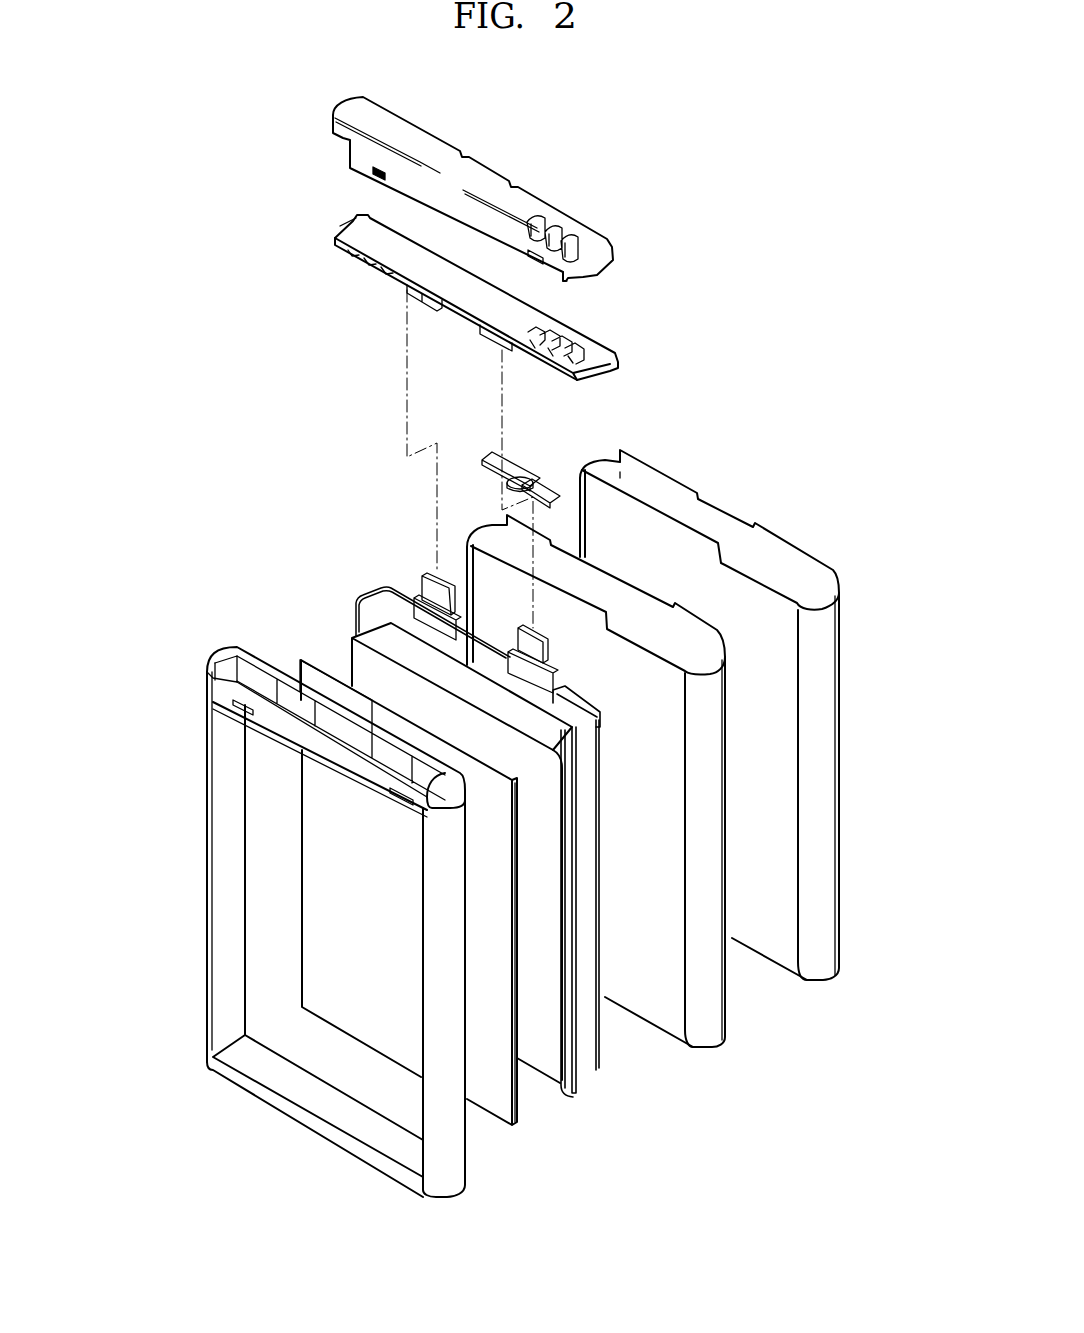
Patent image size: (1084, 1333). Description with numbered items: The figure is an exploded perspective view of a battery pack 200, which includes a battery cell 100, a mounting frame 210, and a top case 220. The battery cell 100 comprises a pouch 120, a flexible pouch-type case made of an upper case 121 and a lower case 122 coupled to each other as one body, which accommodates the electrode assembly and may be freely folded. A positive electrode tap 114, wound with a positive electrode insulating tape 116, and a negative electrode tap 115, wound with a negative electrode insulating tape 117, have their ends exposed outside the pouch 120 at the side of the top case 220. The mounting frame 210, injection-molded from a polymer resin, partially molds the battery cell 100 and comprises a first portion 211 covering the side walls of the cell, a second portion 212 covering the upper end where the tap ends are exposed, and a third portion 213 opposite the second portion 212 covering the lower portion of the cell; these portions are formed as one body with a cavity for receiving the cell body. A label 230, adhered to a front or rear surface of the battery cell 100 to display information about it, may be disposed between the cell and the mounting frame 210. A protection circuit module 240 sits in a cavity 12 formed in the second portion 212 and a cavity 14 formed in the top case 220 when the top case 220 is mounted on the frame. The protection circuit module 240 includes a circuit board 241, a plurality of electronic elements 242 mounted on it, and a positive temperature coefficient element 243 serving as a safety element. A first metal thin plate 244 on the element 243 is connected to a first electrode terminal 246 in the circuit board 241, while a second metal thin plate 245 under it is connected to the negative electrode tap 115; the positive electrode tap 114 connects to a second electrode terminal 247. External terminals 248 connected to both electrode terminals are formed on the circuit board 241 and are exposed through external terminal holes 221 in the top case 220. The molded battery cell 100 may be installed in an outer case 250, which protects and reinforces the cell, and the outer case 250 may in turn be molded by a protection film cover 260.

The battery pack 200 is at (222, 366).
The cavity 12 is at (287, 716).
The cavity 14 is at (572, 281).
The battery cell 100 is at (555, 1096).
The positive electrode tap 114 is at (423, 580).
The negative electrode tap 115 is at (535, 656).
The positive electrode insulating tape 116 is at (414, 605).
The negative electrode insulating tape 117 is at (545, 681).
The pouch 120 is at (698, 1097).
The upper case 121 is at (566, 1100).
The lower case 122 is at (580, 1092).
The mounting frame 210 is at (456, 1202).
The first portion 211 is at (207, 993).
The second portion 212 is at (263, 678).
The third portion 213 is at (276, 1102).
The top case 220 is at (615, 251).
The external terminal holes 221 is at (582, 231).
The label 230 is at (511, 1132).
The protection circuit module 240 is at (627, 371).
The circuit board 241 is at (352, 226).
The electronic elements 242 is at (396, 278).
The positive temperature coefficient (PTC) element 243 is at (528, 472).
The first metal thin plate 244 is at (491, 450).
The second metal thin plate 245 is at (551, 489).
The first electrode terminal 246 is at (497, 339).
The second electrode terminal 247 is at (424, 304).
The external terminals 248 is at (592, 353).
The outer case 250 is at (694, 1048).
The protection film cover 260 is at (837, 982).